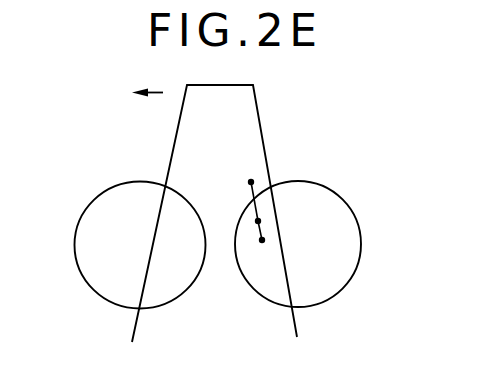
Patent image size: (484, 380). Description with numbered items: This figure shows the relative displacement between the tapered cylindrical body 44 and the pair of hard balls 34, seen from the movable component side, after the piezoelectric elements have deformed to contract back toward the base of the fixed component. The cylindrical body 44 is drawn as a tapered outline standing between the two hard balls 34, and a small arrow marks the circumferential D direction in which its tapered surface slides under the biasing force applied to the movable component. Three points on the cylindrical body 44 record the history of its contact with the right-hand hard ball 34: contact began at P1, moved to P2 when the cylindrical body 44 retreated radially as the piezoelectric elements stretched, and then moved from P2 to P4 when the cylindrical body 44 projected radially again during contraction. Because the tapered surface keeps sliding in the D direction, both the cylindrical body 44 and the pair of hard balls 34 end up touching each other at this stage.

The hard ball 34 is at (106, 213).
The cylindrical body 44 is at (233, 114).
The D direction D is at (135, 95).
The contact point P1 is at (255, 221).
The contact point P2 is at (251, 181).
The contact point P4 is at (262, 240).